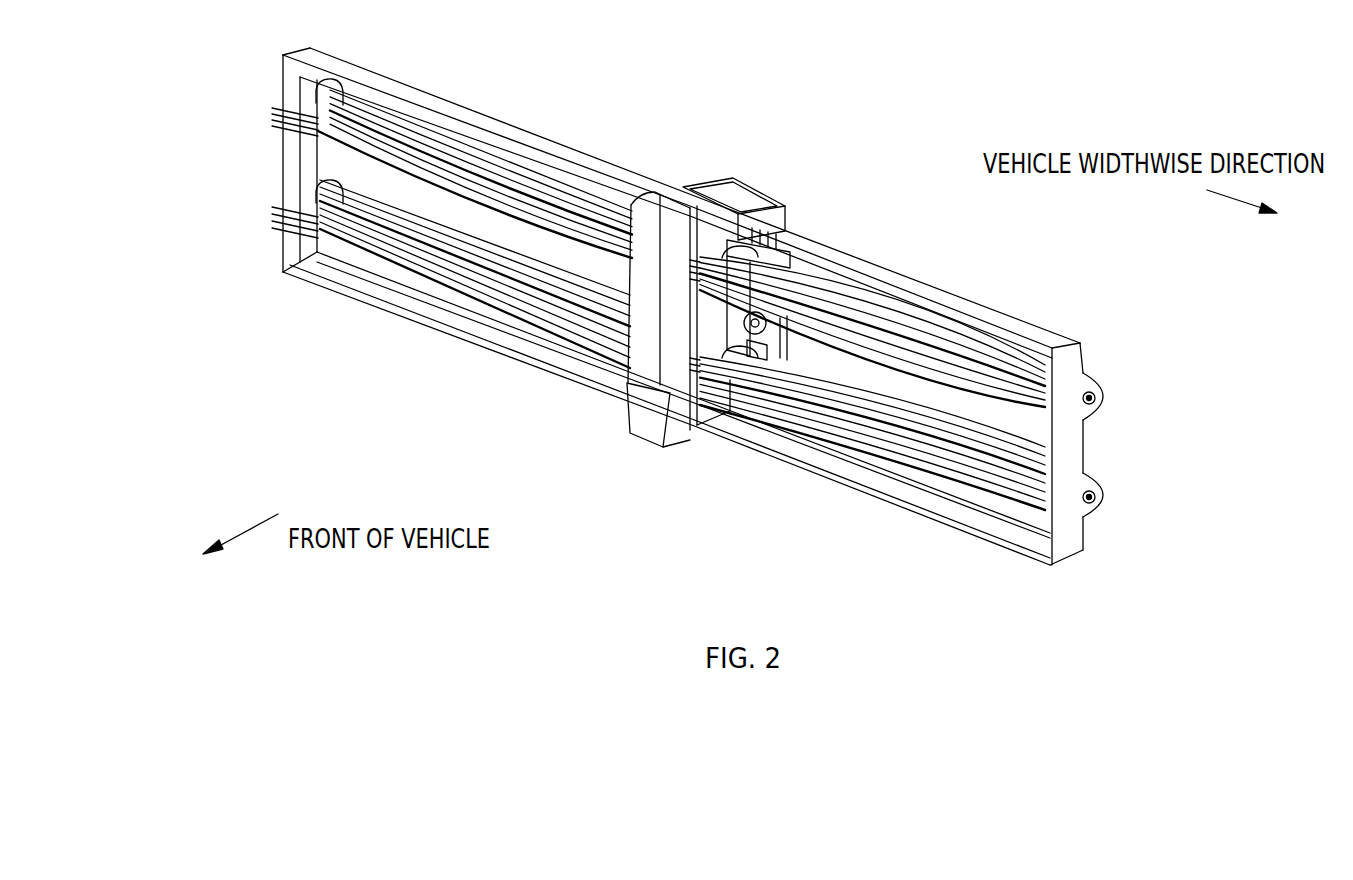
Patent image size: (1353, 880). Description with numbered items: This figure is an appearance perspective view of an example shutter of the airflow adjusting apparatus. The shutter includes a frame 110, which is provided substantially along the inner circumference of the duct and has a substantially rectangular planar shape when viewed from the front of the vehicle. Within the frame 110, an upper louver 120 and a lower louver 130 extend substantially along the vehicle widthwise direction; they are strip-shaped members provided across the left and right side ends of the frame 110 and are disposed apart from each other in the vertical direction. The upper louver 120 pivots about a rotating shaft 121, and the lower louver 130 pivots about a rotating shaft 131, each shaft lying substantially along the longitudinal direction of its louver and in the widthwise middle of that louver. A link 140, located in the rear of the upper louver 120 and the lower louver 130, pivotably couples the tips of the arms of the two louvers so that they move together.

The frame 110 is at (748, 442).
The upper louver 120 is at (285, 132).
The rotating shaft 121 is at (1125, 389).
The lower louver 130 is at (285, 224).
The rotating shaft 131 is at (1125, 487).
The link 140 is at (790, 330).